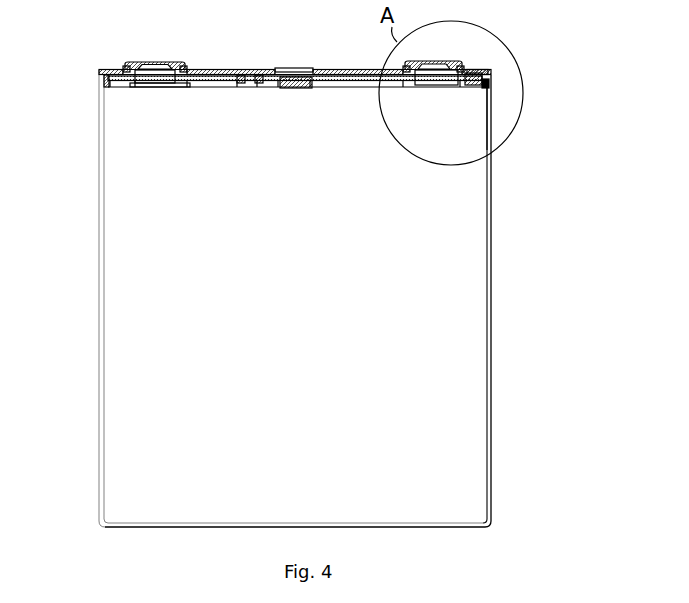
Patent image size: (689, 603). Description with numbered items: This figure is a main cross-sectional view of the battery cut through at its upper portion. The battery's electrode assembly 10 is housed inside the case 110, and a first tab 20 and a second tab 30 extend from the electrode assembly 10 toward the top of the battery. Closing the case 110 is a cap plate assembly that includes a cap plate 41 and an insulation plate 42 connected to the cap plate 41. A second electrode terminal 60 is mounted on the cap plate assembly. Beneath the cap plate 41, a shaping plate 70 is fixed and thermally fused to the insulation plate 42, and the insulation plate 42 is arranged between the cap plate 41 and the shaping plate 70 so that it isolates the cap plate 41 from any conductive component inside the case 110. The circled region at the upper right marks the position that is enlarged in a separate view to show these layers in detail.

The electrode assembly 10 is at (482, 188).
The first tab 20 is at (158, 84).
The second tab 30 is at (442, 87).
The cap plate 41 is at (482, 72).
The insulation plate 42 is at (493, 75).
The second electrode terminal 60 is at (437, 62).
The shaping plate 70 is at (337, 75).
The case 110 is at (488, 147).